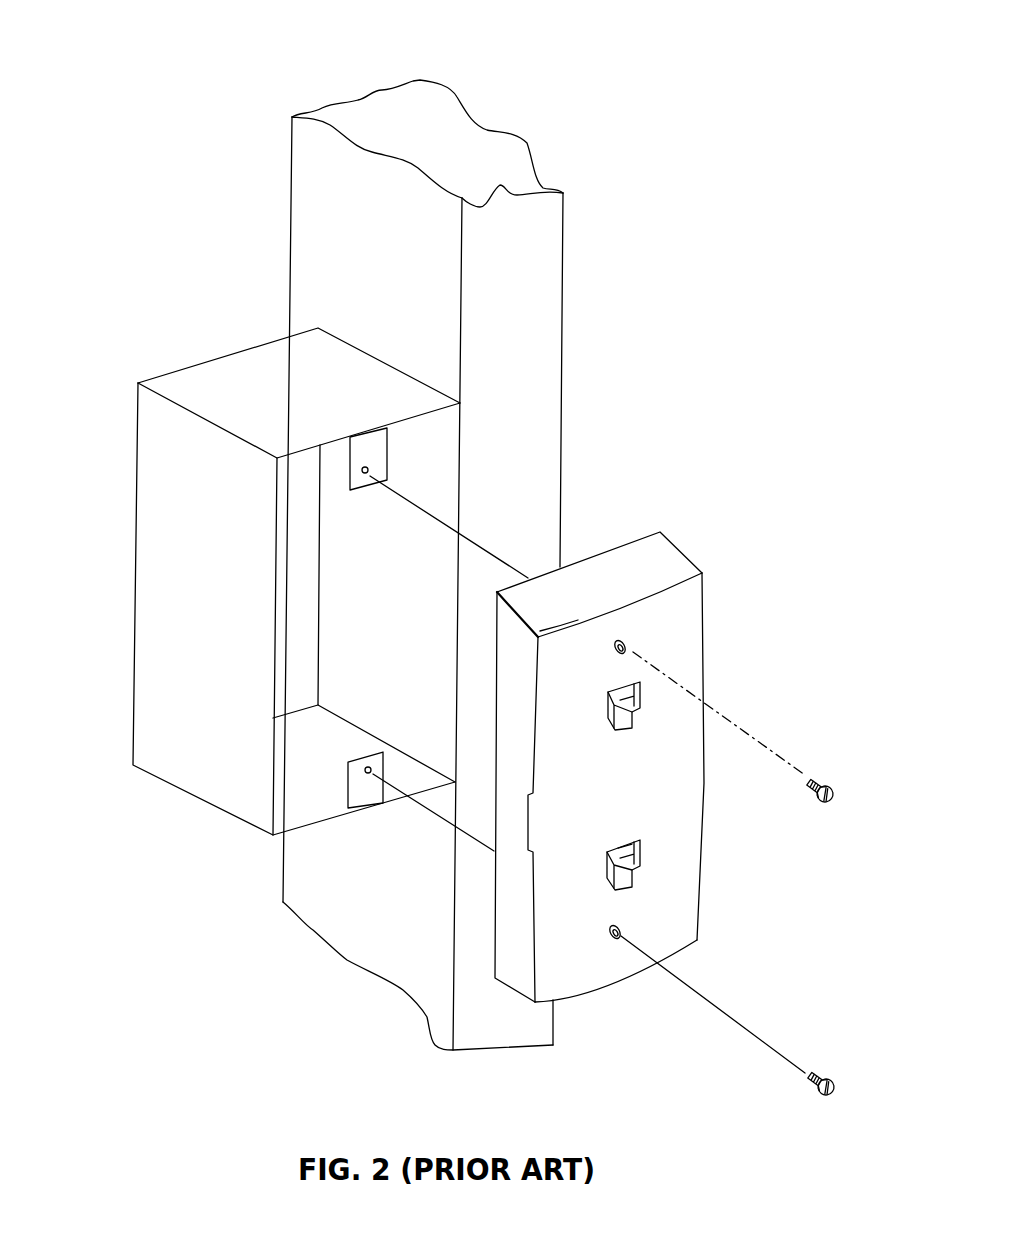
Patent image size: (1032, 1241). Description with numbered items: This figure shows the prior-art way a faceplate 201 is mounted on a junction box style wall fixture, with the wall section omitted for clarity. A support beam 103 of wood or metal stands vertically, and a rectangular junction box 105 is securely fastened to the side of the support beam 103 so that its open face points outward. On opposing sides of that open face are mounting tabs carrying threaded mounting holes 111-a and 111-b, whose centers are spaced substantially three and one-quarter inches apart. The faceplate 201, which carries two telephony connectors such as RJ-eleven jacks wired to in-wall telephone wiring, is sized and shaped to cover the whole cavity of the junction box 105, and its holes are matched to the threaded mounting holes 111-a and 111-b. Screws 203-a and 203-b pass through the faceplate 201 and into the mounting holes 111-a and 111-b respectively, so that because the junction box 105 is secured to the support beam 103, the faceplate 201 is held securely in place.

The support beam 103 is at (458, 172).
The junction box 105 is at (260, 400).
The threaded mounting hole 111-a is at (368, 468).
The threaded mounting hole 111-b is at (366, 775).
The faceplate 201 is at (587, 587).
The screw 203-a is at (818, 777).
The screw 203-b is at (828, 1073).